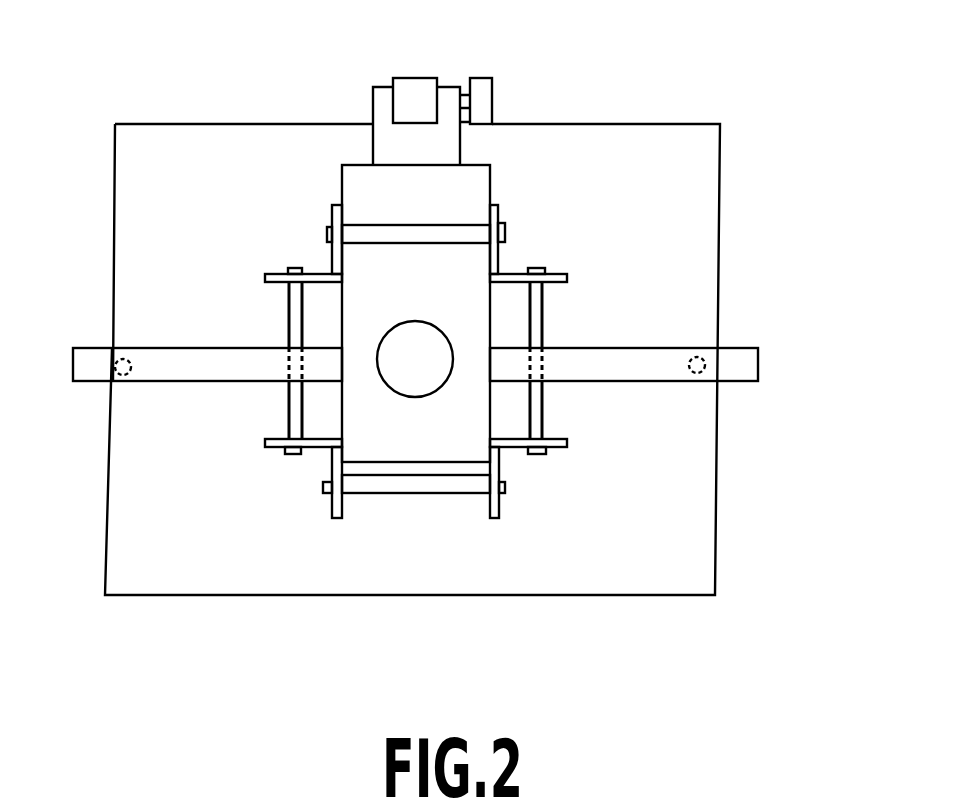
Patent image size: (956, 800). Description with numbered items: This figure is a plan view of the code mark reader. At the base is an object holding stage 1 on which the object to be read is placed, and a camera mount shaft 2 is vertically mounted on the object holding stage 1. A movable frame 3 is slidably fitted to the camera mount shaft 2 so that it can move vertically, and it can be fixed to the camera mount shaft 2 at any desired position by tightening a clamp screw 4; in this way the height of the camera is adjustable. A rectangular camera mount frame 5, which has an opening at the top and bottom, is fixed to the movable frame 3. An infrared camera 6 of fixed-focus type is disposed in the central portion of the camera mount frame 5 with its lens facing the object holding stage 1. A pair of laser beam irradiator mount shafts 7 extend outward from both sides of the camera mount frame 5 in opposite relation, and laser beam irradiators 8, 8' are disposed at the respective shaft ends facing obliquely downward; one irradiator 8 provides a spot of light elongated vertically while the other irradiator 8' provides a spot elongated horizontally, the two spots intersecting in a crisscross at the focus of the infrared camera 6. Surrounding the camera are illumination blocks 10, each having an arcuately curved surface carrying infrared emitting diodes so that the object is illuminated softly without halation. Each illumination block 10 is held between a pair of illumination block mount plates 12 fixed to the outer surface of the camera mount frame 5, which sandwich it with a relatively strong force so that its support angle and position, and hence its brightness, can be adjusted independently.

The object holding stage 1 is at (677, 258).
The camera mount shaft 2 is at (413, 93).
The movable frame 3 is at (383, 113).
The clamp screw 4 is at (477, 88).
The camera mount frame 5 is at (342, 187).
The infrared camera 6 is at (405, 392).
The laser beam irradiator mount shafts 7 is at (175, 355).
The laser beam irradiator 8 is at (87, 311).
The laser beam irradiator 8' is at (746, 414).
The illumination block 10 is at (452, 233).
The illumination block mount plates 12 is at (265, 272).